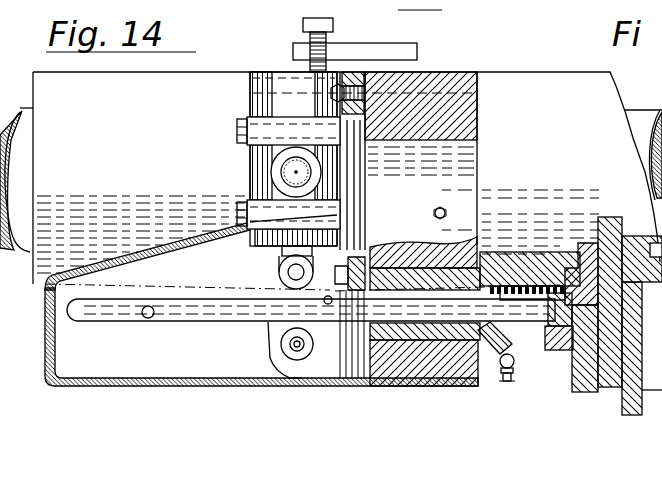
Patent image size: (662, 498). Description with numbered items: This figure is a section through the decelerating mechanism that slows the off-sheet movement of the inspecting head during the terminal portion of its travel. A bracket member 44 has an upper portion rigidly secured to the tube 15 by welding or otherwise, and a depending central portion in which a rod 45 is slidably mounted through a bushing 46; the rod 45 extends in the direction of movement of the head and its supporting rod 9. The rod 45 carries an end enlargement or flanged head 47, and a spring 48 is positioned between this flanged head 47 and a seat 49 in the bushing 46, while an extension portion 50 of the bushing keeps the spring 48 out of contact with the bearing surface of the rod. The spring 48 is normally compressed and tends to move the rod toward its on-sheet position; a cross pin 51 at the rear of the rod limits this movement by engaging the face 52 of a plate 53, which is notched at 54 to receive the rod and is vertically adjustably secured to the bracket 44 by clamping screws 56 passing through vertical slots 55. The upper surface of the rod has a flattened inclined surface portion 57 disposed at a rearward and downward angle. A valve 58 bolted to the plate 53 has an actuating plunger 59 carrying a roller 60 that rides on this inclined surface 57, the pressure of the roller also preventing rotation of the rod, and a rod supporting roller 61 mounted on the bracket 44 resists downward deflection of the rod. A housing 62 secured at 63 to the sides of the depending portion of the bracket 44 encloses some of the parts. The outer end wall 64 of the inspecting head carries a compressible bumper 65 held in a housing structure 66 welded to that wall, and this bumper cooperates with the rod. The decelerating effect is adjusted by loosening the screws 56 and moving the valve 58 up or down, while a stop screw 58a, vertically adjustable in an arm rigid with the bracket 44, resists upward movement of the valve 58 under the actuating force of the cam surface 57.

The supporting rod 9 is at (22, 110).
The tube 15 is at (540, 72).
The bracket member 44 is at (477, 118).
The rod 45 is at (520, 272).
The bushing 46 is at (473, 243).
The flanged head 47 is at (567, 265).
The spring 48 is at (537, 269).
The seat 49 is at (513, 294).
The extension portion 50 is at (515, 338).
The cross pin 51 is at (147, 318).
The face 52 is at (342, 286).
The plate 53 is at (425, 304).
The notch 54 is at (360, 204).
The slot 55 is at (366, 68).
The clamping screw 56 is at (332, 94).
The inclined surface portion 57 is at (437, 266).
The valve 58 is at (250, 180).
The stop screw 58a is at (306, 42).
The actuating plunger 59 is at (280, 254).
The roller 60 is at (280, 280).
The rod supporting roller 61 is at (281, 344).
The housing 62 is at (187, 387).
The securing point 63 is at (433, 213).
The outer end wall 64 is at (622, 412).
The bumper 65 is at (570, 350).
The housing structure 66 is at (606, 226).